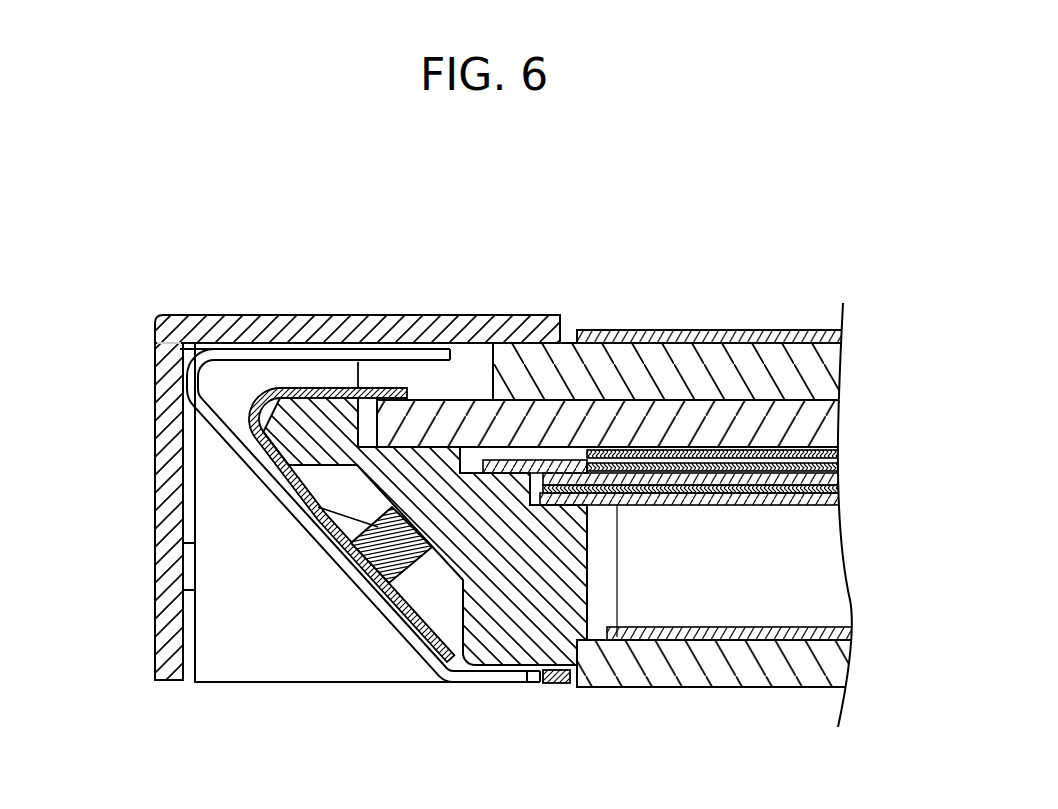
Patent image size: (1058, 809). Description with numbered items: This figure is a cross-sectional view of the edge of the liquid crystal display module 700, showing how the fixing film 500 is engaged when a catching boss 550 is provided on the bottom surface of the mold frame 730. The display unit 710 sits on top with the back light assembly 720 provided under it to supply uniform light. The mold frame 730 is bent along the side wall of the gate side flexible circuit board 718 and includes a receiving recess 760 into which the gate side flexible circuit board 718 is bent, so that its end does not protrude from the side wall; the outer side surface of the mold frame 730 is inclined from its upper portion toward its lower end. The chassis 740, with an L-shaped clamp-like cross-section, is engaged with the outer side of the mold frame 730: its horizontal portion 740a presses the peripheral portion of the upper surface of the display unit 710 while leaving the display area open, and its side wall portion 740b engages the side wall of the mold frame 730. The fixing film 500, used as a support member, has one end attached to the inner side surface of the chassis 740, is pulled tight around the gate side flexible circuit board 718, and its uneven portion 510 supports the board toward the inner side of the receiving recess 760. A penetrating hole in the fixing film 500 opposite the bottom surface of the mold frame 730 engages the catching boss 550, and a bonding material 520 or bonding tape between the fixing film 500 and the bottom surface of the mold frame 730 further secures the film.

The liquid crystal display module 700 is at (753, 288).
The display unit 710 is at (656, 316).
The back light assembly 720 is at (863, 455).
The mold frame 730 is at (716, 692).
The chassis 740 is at (303, 441).
The horizontal portion 740a is at (522, 316).
The side wall portion 740b is at (160, 509).
The fixing film 500 is at (327, 540).
The uneven portion 510 is at (328, 345).
The bonding material 520 is at (557, 688).
The catching boss 550 is at (535, 688).
The gate side flexible circuit board 718 is at (425, 563).
The receiving recess 760 is at (307, 485).